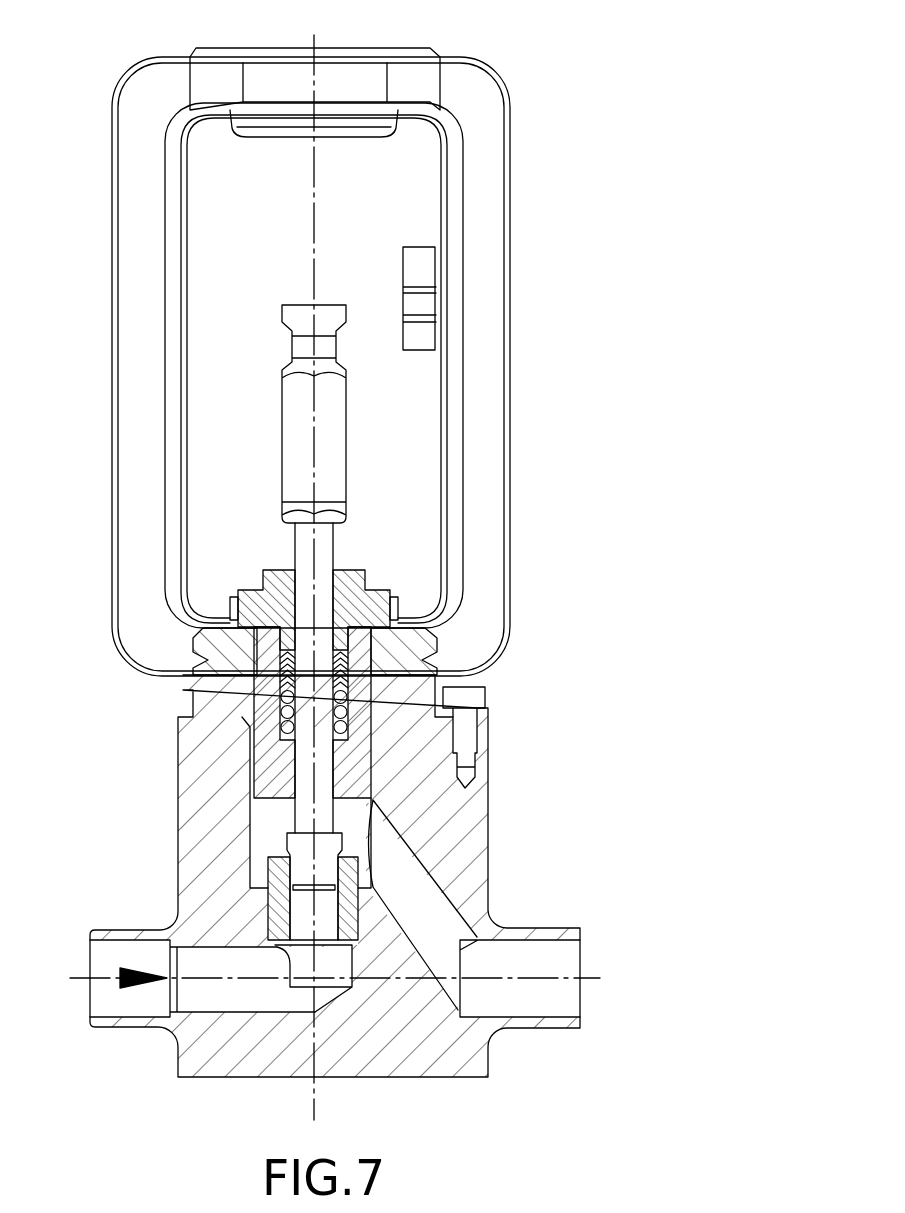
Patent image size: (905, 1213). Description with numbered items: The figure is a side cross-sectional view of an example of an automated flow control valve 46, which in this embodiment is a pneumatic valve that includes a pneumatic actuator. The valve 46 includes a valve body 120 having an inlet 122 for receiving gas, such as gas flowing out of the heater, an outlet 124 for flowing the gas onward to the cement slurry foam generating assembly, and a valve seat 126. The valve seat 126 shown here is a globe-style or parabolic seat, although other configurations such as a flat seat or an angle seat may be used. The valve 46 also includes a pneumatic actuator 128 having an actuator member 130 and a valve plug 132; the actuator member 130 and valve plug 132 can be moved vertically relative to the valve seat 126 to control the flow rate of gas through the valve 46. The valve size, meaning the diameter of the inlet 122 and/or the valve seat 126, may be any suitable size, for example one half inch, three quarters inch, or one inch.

The flow control valve 46 is at (504, 103).
The valve body 120 is at (478, 777).
The inlet 122 is at (103, 955).
The outlet 124 is at (528, 978).
The valve seat 126 is at (305, 970).
The pneumatic actuator 128 is at (293, 568).
The actuator member 130 is at (314, 620).
The valve plug 132 is at (313, 872).